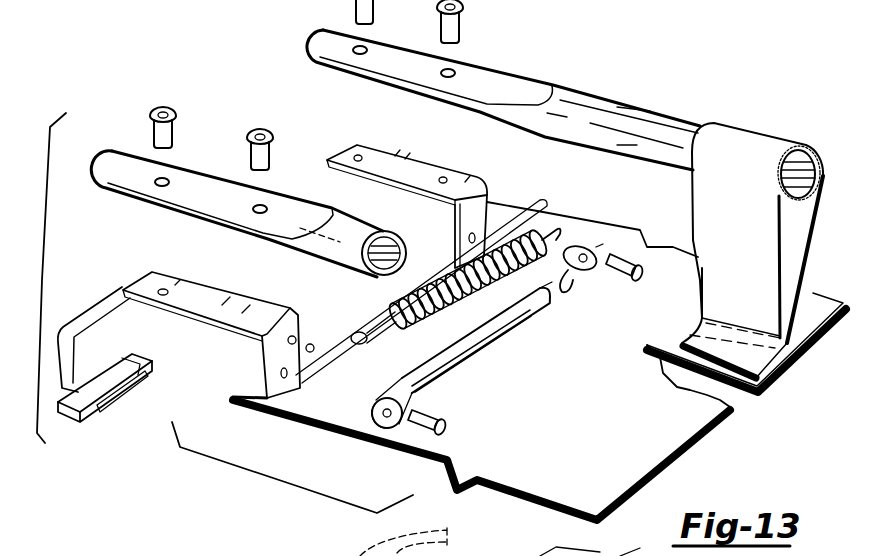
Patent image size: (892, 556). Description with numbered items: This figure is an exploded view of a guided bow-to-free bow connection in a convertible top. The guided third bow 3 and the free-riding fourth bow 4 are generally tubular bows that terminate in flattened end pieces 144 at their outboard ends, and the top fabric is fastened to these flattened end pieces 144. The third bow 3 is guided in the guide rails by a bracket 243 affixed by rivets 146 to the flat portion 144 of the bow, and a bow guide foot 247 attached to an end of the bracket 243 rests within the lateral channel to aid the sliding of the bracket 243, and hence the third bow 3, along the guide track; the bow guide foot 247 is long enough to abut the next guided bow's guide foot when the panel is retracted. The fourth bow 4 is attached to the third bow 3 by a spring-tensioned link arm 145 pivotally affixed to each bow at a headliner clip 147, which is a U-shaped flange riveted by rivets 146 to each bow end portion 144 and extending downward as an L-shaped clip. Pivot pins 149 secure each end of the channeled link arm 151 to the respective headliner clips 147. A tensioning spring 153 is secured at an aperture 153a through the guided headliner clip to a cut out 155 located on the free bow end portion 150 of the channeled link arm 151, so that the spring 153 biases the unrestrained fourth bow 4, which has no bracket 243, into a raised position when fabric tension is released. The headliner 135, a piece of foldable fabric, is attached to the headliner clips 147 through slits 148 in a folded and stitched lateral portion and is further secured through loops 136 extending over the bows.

The third bow 3 is at (207, 175).
The fourth bow 4 is at (317, 32).
The headliner 135 is at (807, 348).
The loops 136 is at (783, 242).
The flattened end pieces 144 is at (272, 194).
The link arm 145 is at (527, 327).
The rivets 146 is at (168, 108).
The headliner clip 147 is at (488, 212).
The slits 148 is at (233, 397).
The pivot pins 149 is at (447, 428).
The free bow end portion 150 is at (600, 243).
The channeled link arm 151 is at (457, 386).
The tensioning spring 153 is at (432, 312).
The aperture 153a is at (300, 340).
The cut out 155 is at (570, 292).
The bracket 243 is at (200, 318).
The bow guide foot 247 is at (113, 410).